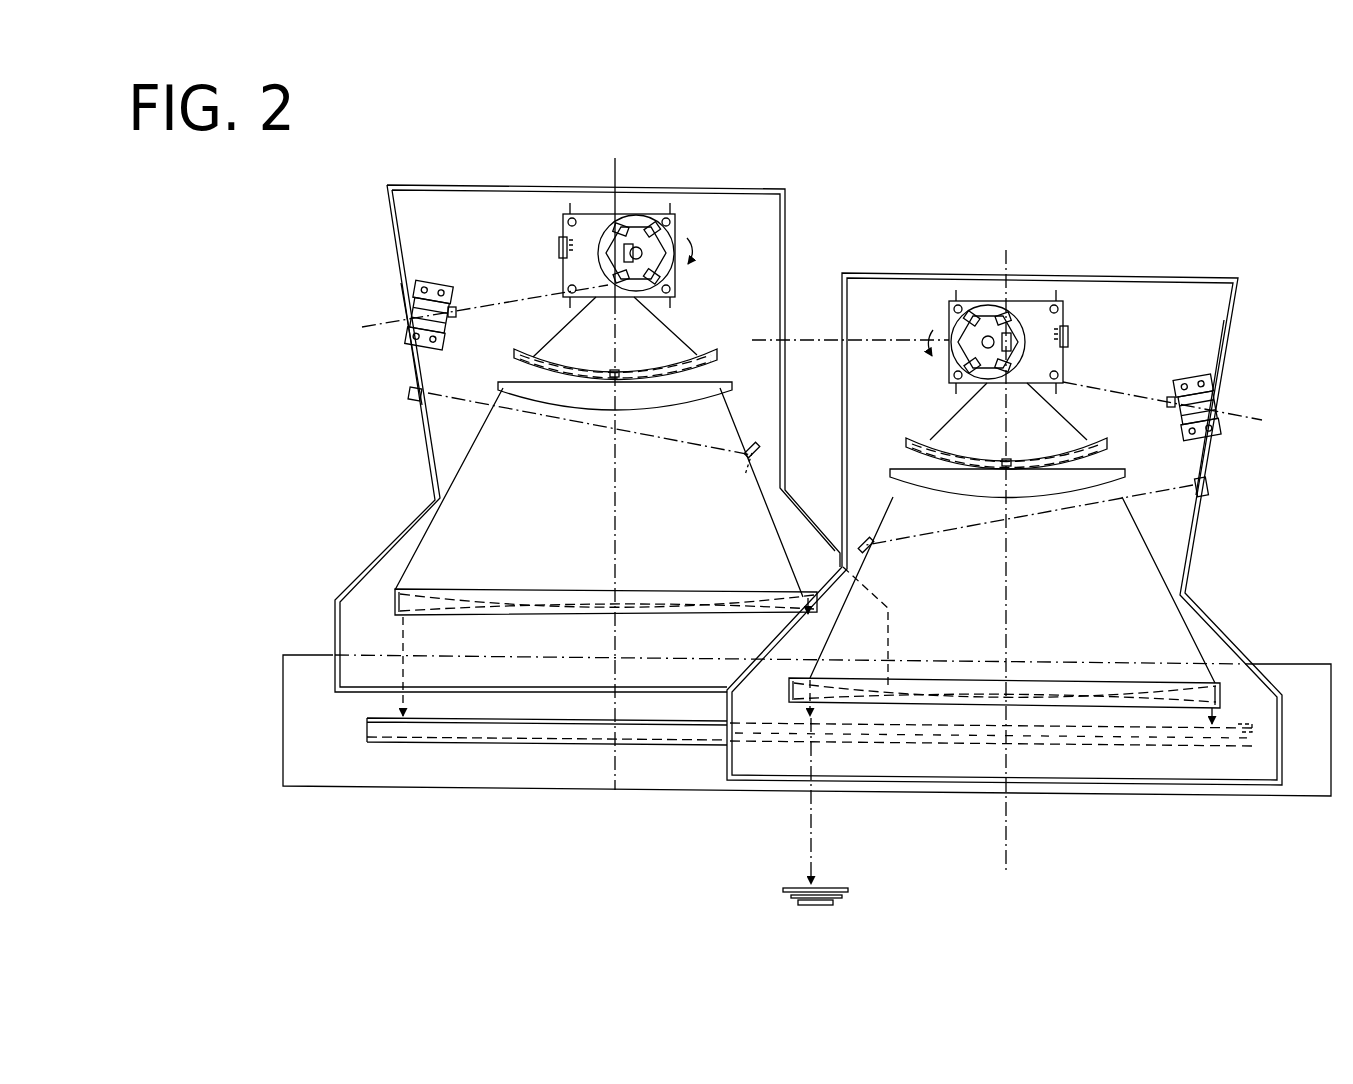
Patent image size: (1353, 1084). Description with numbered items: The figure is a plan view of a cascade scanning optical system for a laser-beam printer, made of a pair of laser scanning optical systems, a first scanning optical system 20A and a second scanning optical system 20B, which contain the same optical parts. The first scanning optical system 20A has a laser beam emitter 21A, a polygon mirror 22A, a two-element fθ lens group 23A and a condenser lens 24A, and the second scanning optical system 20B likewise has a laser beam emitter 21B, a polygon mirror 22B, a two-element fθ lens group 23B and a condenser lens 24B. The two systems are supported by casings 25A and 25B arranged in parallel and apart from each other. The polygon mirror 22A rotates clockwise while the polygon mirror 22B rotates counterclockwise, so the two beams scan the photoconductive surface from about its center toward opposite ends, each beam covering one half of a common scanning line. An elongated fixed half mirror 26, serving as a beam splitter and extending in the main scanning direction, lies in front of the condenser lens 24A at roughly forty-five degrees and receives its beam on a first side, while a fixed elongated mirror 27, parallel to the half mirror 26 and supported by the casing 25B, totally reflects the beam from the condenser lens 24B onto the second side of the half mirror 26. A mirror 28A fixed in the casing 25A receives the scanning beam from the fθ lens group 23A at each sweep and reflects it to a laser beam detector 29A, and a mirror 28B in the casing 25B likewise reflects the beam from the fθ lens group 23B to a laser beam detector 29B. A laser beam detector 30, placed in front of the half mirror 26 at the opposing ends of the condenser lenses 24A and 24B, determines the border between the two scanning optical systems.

The first scanning optical system 20A is at (423, 481).
The second scanning optical system 20B is at (1247, 356).
The laser beam emitter 21A is at (438, 284).
The laser beam emitter 21B is at (1200, 377).
The polygon mirror 22A is at (680, 229).
The polygon mirror 22B is at (1028, 313).
The fθ lens group 23A is at (733, 345).
The fθ lens group 23B is at (1127, 432).
The condenser lens 24A is at (520, 597).
The condenser lens 24B is at (1030, 680).
The casing 25A is at (764, 276).
The casing 25B is at (1200, 300).
The half mirror 26 is at (580, 746).
The mirror 27 is at (1185, 748).
The mirror 28A is at (750, 466).
The mirror 28B is at (872, 549).
The laser beam detector 29A is at (422, 402).
The laser beam detector 29B is at (1209, 478).
The laser beam detector 30 is at (820, 906).